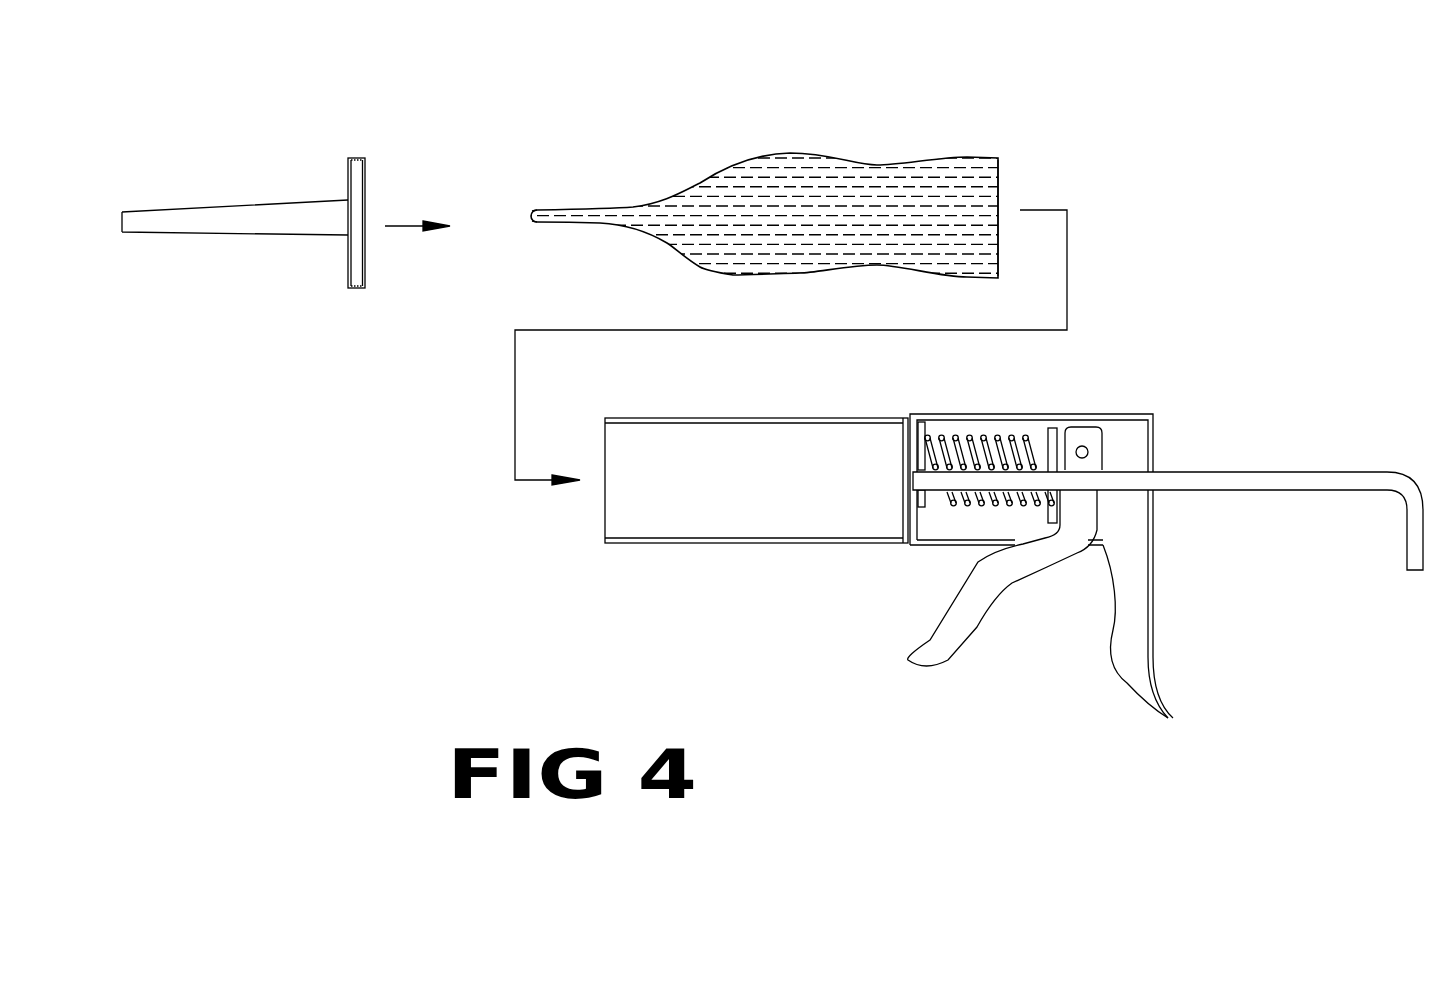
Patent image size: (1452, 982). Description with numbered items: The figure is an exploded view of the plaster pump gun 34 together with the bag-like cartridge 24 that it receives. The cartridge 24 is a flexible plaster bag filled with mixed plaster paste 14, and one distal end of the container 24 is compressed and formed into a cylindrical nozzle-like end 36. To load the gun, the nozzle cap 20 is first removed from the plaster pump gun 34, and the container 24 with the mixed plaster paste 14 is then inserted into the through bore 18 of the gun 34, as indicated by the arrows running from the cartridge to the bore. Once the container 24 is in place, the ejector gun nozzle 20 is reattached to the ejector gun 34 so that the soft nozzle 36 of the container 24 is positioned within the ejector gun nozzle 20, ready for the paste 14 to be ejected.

The nozzle cap 20 is at (233, 210).
The mixed plaster paste 14 is at (740, 208).
The cylindrical nozzle-like end 36 is at (578, 212).
The bag-like cartridge 24 is at (1000, 177).
The through bore 18 is at (755, 455).
The plaster pump gun 34 is at (1153, 445).